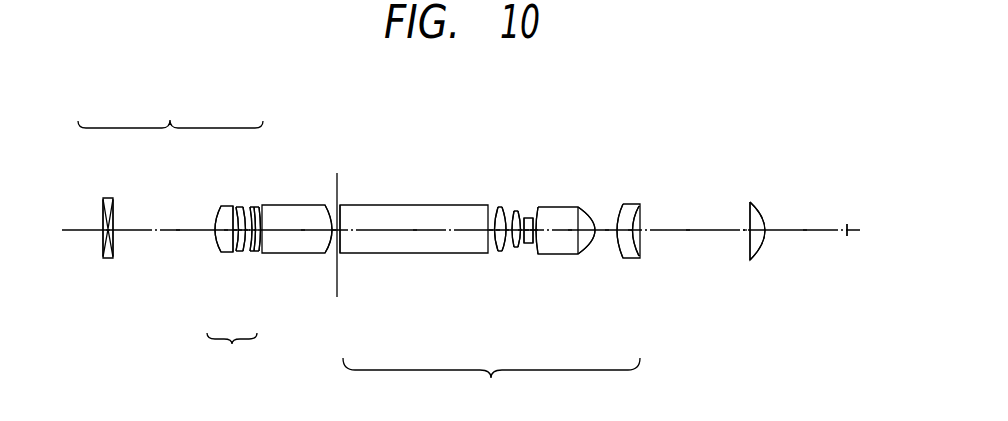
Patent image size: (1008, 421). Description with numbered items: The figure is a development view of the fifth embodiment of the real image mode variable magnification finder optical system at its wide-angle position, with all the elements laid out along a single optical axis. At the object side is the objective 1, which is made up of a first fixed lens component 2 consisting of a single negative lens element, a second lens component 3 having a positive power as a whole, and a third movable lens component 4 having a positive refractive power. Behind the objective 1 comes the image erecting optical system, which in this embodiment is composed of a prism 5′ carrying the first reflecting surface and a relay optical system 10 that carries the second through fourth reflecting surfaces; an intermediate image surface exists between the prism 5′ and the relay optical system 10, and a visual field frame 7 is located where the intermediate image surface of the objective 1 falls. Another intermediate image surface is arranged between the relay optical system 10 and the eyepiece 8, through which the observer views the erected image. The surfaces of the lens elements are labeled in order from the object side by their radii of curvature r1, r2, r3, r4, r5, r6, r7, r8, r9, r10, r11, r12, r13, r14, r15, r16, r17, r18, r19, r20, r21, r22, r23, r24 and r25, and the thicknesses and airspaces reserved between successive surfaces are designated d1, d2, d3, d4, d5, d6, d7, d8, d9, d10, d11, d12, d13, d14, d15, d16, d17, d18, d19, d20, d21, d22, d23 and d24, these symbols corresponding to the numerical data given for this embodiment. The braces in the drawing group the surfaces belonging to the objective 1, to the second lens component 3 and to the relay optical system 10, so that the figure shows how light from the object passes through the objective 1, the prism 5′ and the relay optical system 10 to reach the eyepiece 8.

The objective 1 is at (170, 110).
The first fixed lens component 2 is at (108, 258).
The second lens component 3 is at (232, 290).
The third movable lens component 4 is at (245, 252).
The prism 5′ is at (257, 252).
The visual field frame 7 is at (338, 200).
The eyepiece 8 is at (752, 203).
The relay optical system 10 is at (491, 382).
The radius of curvature r1 is at (103, 205).
The radius of curvature r2 is at (113, 205).
The radius of curvature r3 is at (215, 222).
The radius of curvature r4 is at (233, 207).
The radius of curvature r5 is at (237, 207).
The radius of curvature r6 is at (244, 207).
The radius of curvature r7 is at (251, 207).
The radius of curvature r8 is at (255, 207).
The radius of curvature r9 is at (260, 207).
The radius of curvature r10 is at (330, 207).
The radius of curvature r11 is at (340, 205).
The radius of curvature r12 is at (494, 207).
The radius of curvature r13 is at (504, 207).
The radius of curvature r14 is at (512, 211).
The radius of curvature r15 is at (519, 211).
The radius of curvature r16 is at (524, 218).
The radius of curvature r17 is at (533, 218).
The radius of curvature r18 is at (536, 207).
The radius of curvature r19 is at (582, 207).
The radius of curvature r20 is at (594, 218).
The radius of curvature r21 is at (618, 215).
The radius of curvature r22 is at (640, 204).
The radius of curvature r23 is at (750, 210).
The radius of curvature r24 is at (762, 212).
The radius of curvature r25 is at (847, 224).
The airspace d1 is at (108, 232).
The airspace d2 is at (178, 232).
The airspace d3 is at (226, 232).
The airspace d4 is at (235, 232).
The airspace d5 is at (240, 232).
The airspace d6 is at (246, 232).
The airspace d7 is at (251, 232).
The airspace d8 is at (256, 232).
The airspace d9 is at (303, 232).
The airspace d10 is at (334, 232).
The airspace d11 is at (415, 232).
The airspace d12 is at (491, 232).
The airspace d13 is at (499, 232).
The airspace d14 is at (507, 232).
The airspace d15 is at (520, 232).
The airspace d16 is at (527, 232).
The airspace d17 is at (532, 232).
The airspace d18 is at (536, 232).
The airspace d19 is at (570, 232).
The airspace d20 is at (607, 232).
The airspace d21 is at (630, 232).
The airspace d22 is at (688, 232).
The airspace d23 is at (746, 232).
The airspace d24 is at (805, 232).